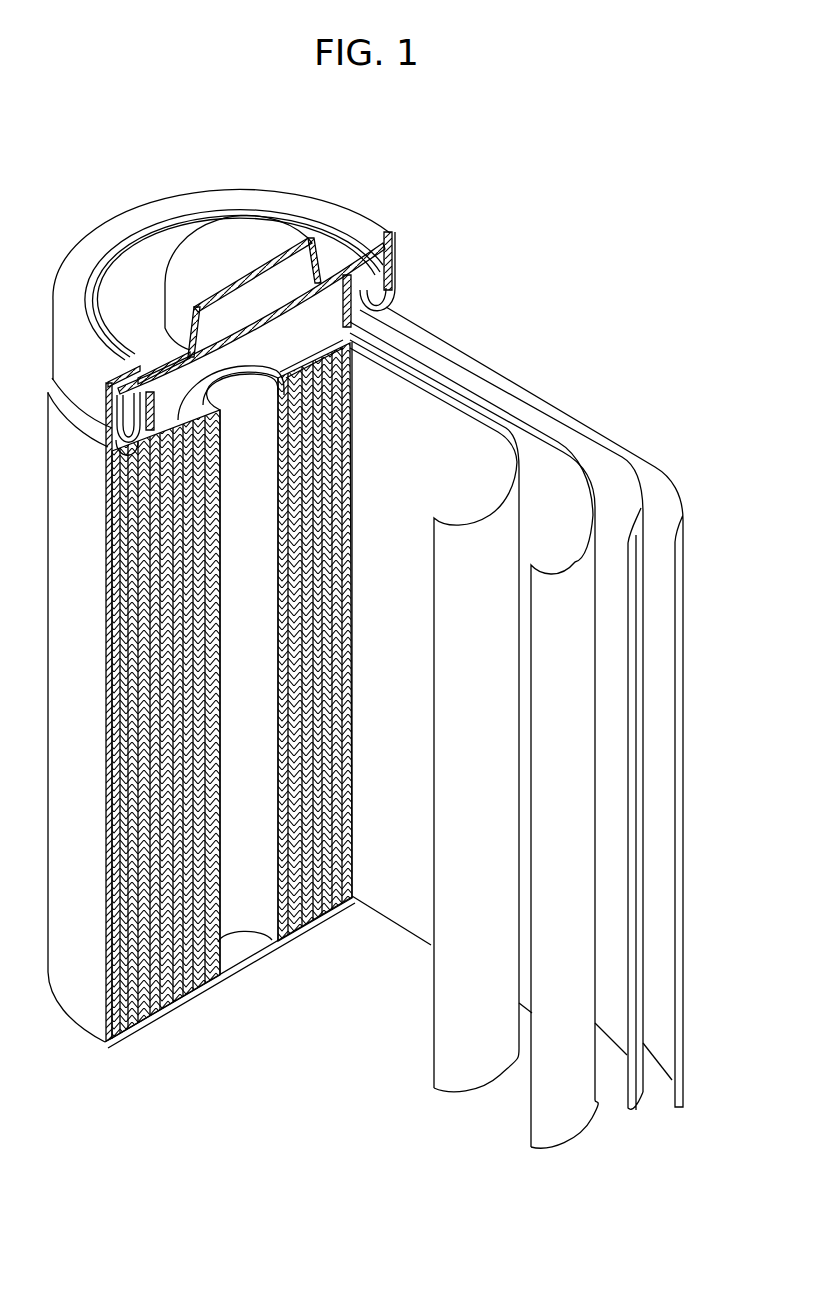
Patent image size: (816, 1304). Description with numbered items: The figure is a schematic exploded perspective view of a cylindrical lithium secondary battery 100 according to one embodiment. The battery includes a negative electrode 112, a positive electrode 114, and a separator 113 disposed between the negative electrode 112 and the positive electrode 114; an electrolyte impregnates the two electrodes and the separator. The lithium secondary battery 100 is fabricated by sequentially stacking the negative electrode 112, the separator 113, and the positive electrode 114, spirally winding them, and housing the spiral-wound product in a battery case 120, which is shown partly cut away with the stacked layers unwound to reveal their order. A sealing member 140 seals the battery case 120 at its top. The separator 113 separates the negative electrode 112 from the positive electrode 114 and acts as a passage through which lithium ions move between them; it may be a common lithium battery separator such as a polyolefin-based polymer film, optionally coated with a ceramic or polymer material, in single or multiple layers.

The lithium secondary battery 100 is at (405, 160).
The battery case 120 is at (86, 1012).
The sealing member 140 is at (197, 247).
The negative electrode 112 is at (648, 490).
The separator 113 is at (455, 415).
The positive electrode 114 is at (533, 427).